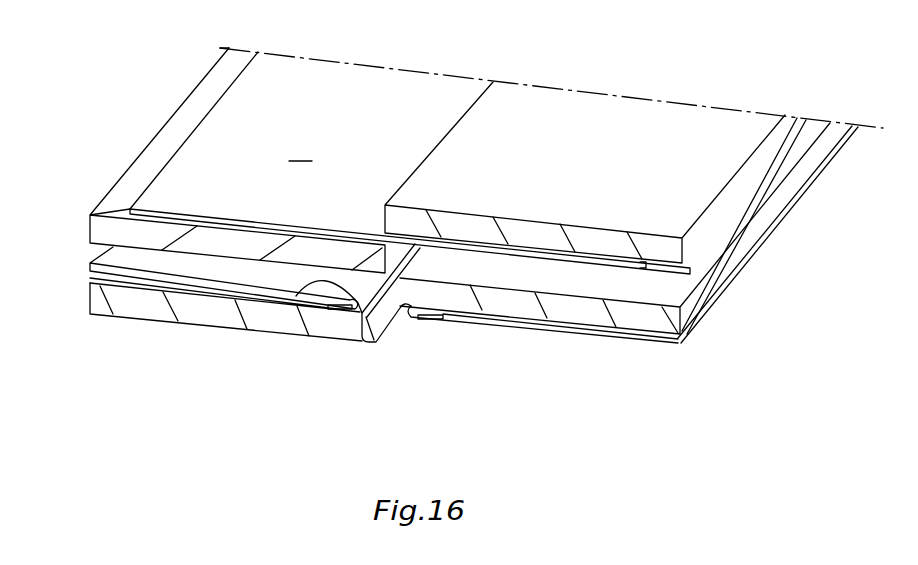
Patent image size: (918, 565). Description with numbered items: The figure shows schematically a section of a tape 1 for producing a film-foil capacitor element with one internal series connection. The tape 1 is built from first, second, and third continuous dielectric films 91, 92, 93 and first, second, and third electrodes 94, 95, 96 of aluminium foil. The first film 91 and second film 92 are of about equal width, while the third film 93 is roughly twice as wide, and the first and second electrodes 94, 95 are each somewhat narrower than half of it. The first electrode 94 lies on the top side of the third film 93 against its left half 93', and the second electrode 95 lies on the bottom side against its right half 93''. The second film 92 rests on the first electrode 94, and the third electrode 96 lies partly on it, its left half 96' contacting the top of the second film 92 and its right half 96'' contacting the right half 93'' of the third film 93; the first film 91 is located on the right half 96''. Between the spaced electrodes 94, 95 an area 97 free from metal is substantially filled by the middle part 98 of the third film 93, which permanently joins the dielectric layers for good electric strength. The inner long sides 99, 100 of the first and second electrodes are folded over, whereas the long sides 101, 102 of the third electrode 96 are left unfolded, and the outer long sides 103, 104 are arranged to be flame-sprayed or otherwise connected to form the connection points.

The tape 1 is at (717, 391).
The first film 91 is at (604, 165).
The second film 92 is at (123, 230).
The third film 93 is at (226, 343).
The left half of the third film 93' is at (204, 342).
The right half of the third film 93'' is at (615, 262).
The first electrode 94 is at (167, 282).
The second electrode 95 is at (595, 333).
The third electrode 96 is at (397, 84).
The left half of the third electrode 96' is at (304, 147).
The right half of the third electrode 96'' is at (474, 264).
The area free from metal material 97 is at (280, 287).
The middle part of the third film 98 is at (383, 313).
The inner long side of the first electrode 99 is at (342, 312).
The inner long side of the second electrode 100 is at (430, 320).
The long side of the third electrode 101 is at (168, 160).
The long side of the third electrode 102 is at (645, 265).
The outer long side of the first electrode 103 is at (95, 265).
The outer long side of the second electrode 104 is at (693, 330).